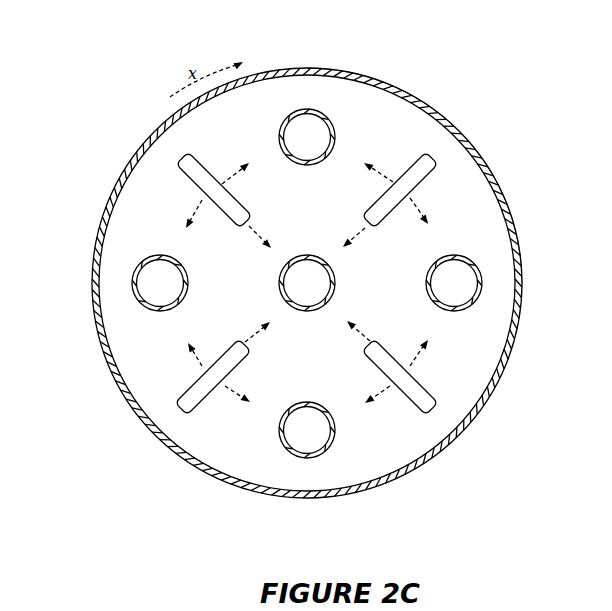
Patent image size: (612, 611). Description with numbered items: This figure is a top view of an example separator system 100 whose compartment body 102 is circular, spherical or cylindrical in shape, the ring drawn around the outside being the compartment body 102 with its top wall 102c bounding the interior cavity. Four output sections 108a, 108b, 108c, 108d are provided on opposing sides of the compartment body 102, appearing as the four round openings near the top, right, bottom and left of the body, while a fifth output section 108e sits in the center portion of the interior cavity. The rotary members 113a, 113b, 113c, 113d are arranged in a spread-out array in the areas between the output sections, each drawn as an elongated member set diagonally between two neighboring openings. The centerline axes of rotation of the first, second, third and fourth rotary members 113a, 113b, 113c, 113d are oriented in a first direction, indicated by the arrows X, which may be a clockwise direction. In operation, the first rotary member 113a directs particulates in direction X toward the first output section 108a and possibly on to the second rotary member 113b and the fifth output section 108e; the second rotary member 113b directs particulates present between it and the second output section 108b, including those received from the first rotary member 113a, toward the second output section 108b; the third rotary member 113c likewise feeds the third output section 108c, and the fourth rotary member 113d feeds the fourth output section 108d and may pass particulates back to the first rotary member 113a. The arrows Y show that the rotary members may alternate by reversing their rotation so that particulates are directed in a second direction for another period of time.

The separator system 100 is at (500, 56).
The compartment body 102 is at (386, 79).
The top wall 102c is at (500, 181).
The first output section 108a is at (308, 108).
The second output section 108b is at (482, 281).
The third output section 108c is at (307, 459).
The fourth output section 108d is at (138, 298).
The fifth output section 108e is at (381, 276).
The first rotary member 113a is at (180, 158).
The second rotary member 113b is at (433, 155).
The third rotary member 113c is at (433, 415).
The fourth rotary member 113d is at (182, 415).